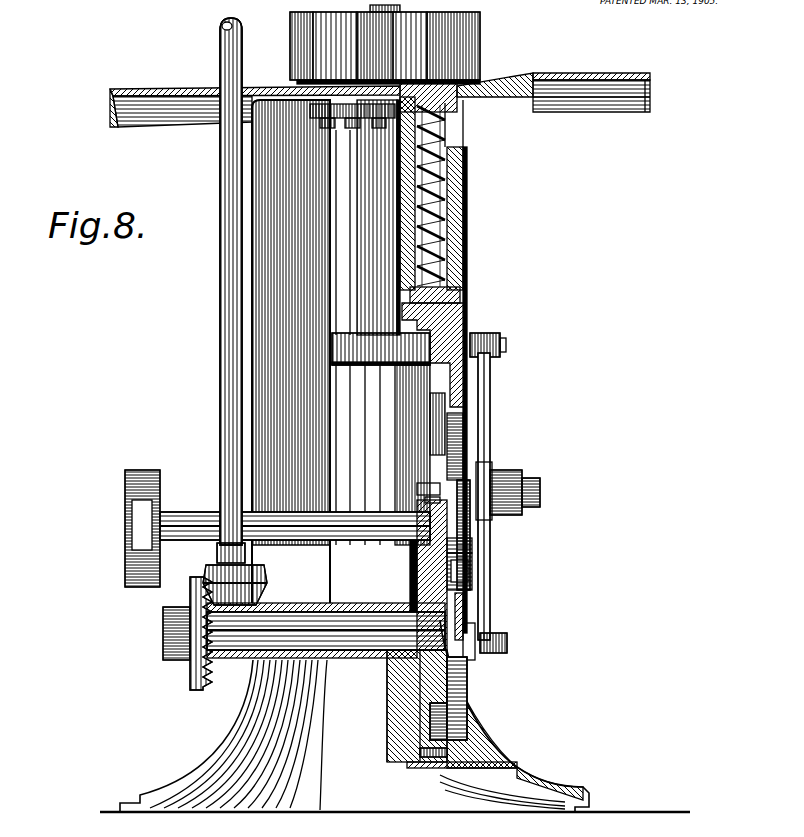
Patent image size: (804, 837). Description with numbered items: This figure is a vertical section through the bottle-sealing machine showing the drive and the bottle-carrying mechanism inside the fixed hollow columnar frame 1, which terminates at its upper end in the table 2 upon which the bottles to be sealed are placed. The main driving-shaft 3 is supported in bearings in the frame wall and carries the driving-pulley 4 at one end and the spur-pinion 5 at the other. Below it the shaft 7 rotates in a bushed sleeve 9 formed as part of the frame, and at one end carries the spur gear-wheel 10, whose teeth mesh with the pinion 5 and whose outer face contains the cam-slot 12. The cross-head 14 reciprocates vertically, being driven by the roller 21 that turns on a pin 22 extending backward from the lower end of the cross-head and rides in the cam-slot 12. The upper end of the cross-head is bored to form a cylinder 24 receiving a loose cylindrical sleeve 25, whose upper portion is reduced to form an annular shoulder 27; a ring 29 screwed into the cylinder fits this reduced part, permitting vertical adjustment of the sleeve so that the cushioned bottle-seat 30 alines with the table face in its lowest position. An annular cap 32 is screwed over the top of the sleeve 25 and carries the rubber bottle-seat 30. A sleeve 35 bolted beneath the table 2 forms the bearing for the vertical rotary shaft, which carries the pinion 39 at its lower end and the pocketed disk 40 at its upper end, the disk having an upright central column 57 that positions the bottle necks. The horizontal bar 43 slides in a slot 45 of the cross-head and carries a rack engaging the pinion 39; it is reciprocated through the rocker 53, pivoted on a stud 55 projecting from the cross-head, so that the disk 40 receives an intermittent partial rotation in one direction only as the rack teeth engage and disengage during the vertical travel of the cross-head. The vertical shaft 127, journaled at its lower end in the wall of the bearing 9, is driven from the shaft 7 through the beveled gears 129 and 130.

The hollow columnar frame 1 is at (482, 724).
The table 2 is at (652, 84).
The main driving-shaft 3 is at (295, 509).
The driving-pulley 4 is at (127, 510).
The spur-pinion 5 is at (417, 488).
The shaft 7 is at (330, 650).
The bushed sleeve 9 is at (330, 598).
The spur gear-wheel 10 is at (457, 681).
The cam-slot 12 is at (462, 688).
The cross-head 14 is at (455, 407).
The roller 21 is at (449, 558).
The pin 22 is at (597, 73).
The cylinder 24 is at (468, 272).
The cylindrical sleeve 25 is at (465, 186).
The annular shoulder 27 is at (469, 202).
The ring 29 is at (453, 148).
The cushioned bottle-seat 30 is at (470, 85).
The annular cap 32 is at (517, 74).
The sleeve 35 is at (363, 254).
The pinion 39 is at (380, 366).
The pocketed disk 40 is at (481, 48).
The horizontal bar 43 is at (472, 337).
The slot 45 is at (468, 318).
The rocker 53 is at (491, 438).
The stud 55 is at (541, 491).
The central column 57 is at (372, 14).
The vertical shaft 127 is at (237, 344).
The beveled gear 129 is at (190, 683).
The beveled gear 130 is at (203, 567).